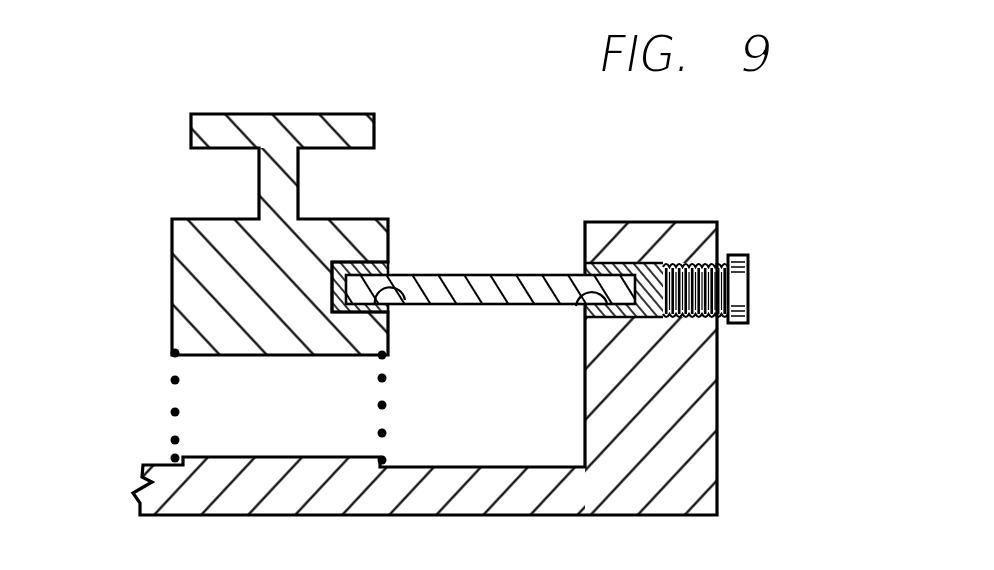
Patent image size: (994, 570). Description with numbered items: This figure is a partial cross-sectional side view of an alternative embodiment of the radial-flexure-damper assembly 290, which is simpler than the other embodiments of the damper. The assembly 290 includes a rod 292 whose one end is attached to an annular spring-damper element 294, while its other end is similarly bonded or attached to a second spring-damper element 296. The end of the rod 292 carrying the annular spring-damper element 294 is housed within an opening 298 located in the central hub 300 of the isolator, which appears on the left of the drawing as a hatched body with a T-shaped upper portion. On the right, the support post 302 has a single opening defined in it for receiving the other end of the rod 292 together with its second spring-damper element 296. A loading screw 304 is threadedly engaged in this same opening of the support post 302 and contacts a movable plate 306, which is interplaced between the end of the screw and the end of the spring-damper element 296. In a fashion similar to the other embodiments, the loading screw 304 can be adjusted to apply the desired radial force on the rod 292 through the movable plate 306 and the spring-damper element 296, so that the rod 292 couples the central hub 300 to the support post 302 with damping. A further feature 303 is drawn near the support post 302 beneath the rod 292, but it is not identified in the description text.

The clamping assembly 290 is at (718, 202).
The bar 292 is at (493, 274).
The bushing 294 is at (359, 272).
The bushing 296 is at (603, 275).
The pin 298 is at (405, 300).
The movable block 300 is at (178, 274).
The fixed block 302 is at (685, 406).
The pin 303 is at (577, 306).
The bolt 304 is at (745, 292).
The bolt tip 306 is at (654, 305).